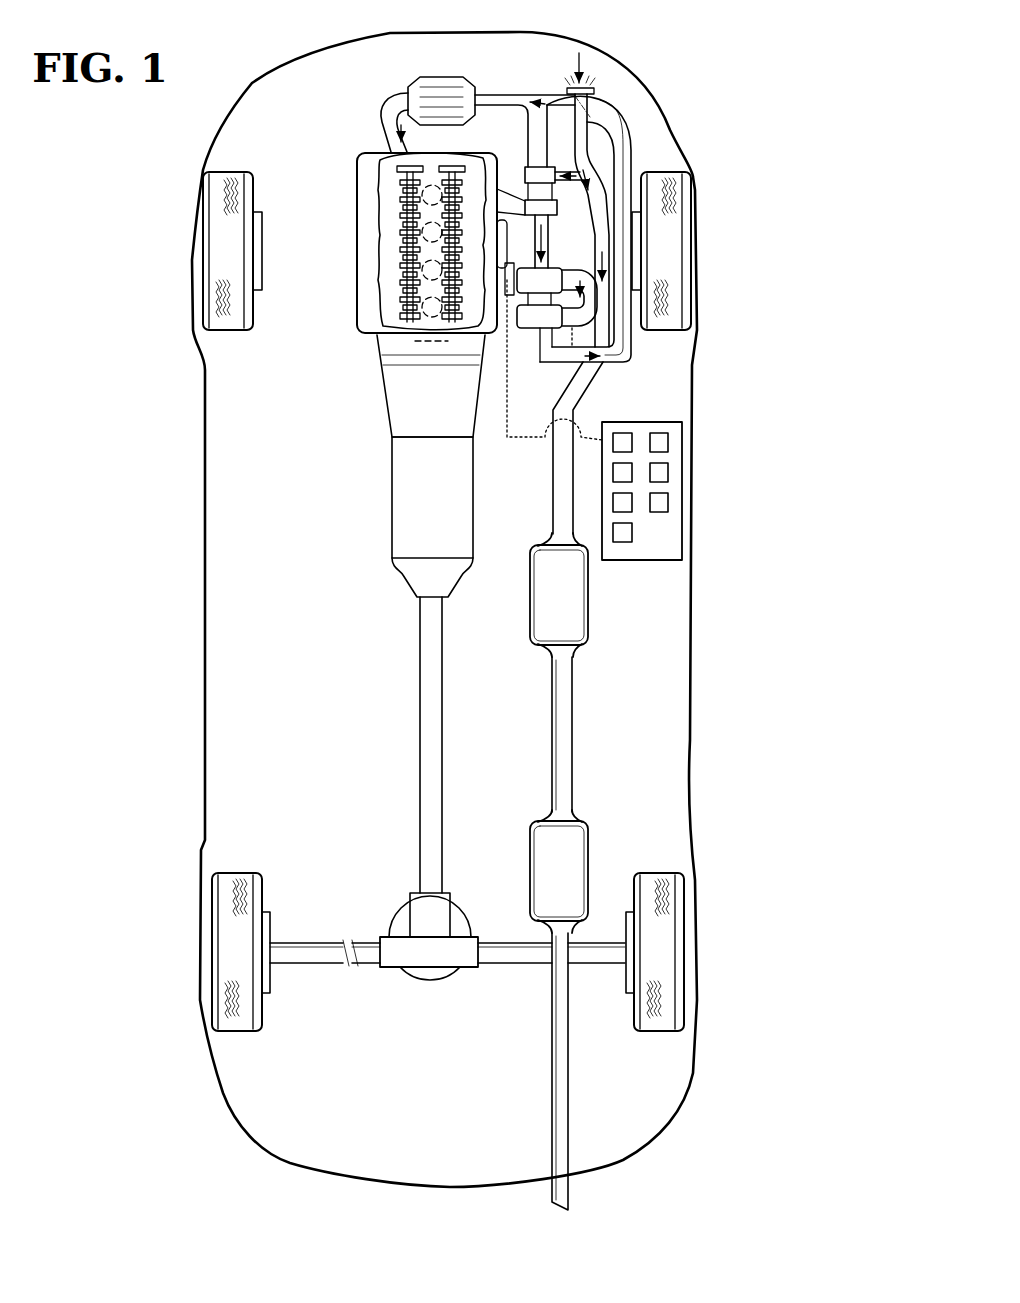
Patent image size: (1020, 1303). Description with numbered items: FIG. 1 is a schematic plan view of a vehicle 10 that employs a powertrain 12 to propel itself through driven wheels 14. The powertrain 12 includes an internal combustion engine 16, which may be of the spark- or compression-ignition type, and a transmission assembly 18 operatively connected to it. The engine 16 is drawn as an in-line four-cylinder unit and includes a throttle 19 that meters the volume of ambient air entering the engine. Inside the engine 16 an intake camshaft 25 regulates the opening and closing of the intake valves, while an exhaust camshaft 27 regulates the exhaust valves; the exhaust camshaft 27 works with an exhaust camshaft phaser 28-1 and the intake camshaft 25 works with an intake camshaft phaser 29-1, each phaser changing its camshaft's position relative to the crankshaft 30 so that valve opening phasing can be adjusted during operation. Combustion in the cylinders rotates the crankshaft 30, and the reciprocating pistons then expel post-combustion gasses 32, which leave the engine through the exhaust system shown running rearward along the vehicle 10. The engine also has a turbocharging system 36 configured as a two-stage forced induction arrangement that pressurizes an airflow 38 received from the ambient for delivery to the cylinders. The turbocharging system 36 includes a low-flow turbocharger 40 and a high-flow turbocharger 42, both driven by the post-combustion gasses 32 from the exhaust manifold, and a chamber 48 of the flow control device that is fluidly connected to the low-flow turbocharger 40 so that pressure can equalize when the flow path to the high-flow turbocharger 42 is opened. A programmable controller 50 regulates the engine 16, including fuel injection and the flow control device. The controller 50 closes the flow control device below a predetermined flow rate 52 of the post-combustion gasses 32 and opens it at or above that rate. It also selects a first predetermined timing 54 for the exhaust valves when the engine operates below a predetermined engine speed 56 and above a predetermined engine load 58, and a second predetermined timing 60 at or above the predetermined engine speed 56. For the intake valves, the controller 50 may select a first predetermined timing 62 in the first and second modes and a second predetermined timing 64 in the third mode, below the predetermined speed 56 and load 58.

The vehicle 10 is at (183, 500).
The powertrain 12 is at (348, 553).
The driven wheels 14 is at (235, 957).
The internal combustion engine 16 is at (350, 181).
The transmission assembly 18 is at (421, 512).
The throttle 19 is at (596, 87).
The intake camshaft 25 is at (395, 268).
The exhaust camshaft 27 is at (473, 303).
The exhaust camshaft phaser 28-1 is at (457, 166).
The intake camshaft phaser 29-1 is at (397, 168).
The crankshaft 30 is at (430, 345).
The post-combustion gasses 32 is at (540, 247).
The turbocharging system 36 is at (648, 145).
The airflow 38 is at (541, 103).
The low-flow turbocharger 40 is at (538, 160).
The high-flow turbocharger 42 is at (526, 340).
The chamber 48 is at (519, 263).
The programmable controller 50 is at (651, 512).
The predetermined flow rate 52 is at (668, 502).
The first predetermined timing 54 is at (668, 472).
The predetermined engine speed 56 is at (668, 441).
The predetermined engine load 58 is at (613, 442).
The second predetermined timing 60 is at (613, 472).
The first predetermined timing 62 is at (613, 502).
The second predetermined timing 64 is at (613, 532).